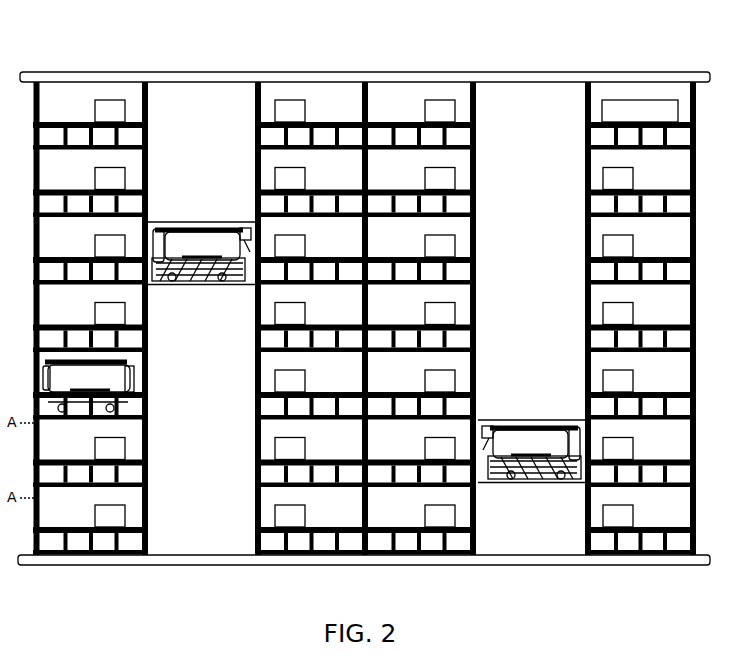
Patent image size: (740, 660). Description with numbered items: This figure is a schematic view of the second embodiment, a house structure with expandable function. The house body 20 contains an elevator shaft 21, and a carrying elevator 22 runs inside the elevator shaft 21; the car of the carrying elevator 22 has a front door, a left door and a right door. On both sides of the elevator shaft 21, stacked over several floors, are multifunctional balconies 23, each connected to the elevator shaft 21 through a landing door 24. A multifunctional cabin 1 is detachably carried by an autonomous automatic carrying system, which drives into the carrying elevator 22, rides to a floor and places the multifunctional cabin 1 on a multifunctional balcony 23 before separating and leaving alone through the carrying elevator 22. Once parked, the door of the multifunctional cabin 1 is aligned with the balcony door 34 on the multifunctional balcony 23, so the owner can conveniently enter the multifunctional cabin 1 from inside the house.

The multifunctional cabin 1 is at (192, 237).
The house body 20 is at (420, 72).
The elevator shaft 21 is at (518, 132).
The carrying elevator 22 is at (218, 212).
The multifunctional balcony 23 is at (75, 113).
The landing door 24 is at (150, 97).
The balcony door 34 is at (443, 100).